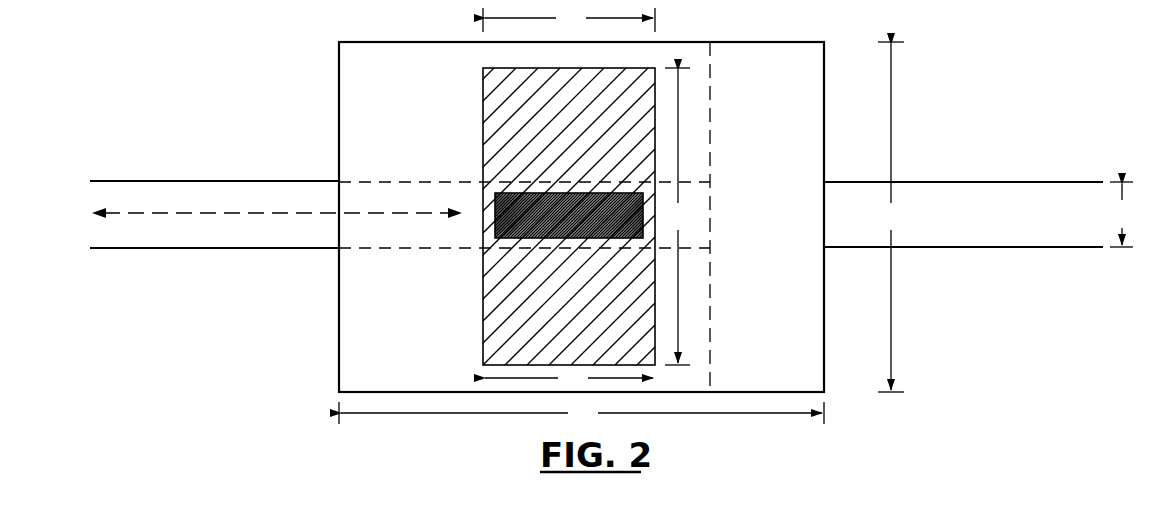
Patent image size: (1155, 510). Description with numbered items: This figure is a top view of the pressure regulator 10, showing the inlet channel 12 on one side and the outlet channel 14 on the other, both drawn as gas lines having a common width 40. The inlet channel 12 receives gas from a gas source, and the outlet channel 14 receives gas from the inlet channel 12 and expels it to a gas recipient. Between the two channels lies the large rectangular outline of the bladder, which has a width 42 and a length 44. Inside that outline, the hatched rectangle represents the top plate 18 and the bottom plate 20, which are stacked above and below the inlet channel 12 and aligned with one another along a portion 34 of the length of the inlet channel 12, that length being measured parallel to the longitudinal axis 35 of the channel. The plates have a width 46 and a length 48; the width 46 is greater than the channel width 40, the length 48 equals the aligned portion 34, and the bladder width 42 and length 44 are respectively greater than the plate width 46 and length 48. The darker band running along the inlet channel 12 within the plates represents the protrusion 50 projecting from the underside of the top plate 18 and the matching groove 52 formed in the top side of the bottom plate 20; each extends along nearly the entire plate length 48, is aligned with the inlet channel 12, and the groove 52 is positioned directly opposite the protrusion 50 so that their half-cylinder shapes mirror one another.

The pressure regulator 10 is at (1050, 68).
The inlet channel 12 is at (130, 198).
The outlet channel 14 is at (962, 200).
The top plate 18 is at (565, 211).
The bottom plate 20 is at (483, 106).
The portion of the length of the inlet channel 34 is at (569, 19).
The longitudinal axis 35 is at (207, 213).
The width of the inlet and outlet channels 40 is at (1123, 214).
The width of the bladder 42 is at (892, 217).
The length of the bladder 44 is at (581, 413).
The width of the top and bottom plates 46 is at (680, 216).
The length of the top and bottom plates 48 is at (569, 378).
The protrusion 50 is at (538, 252).
The groove 52 is at (500, 241).